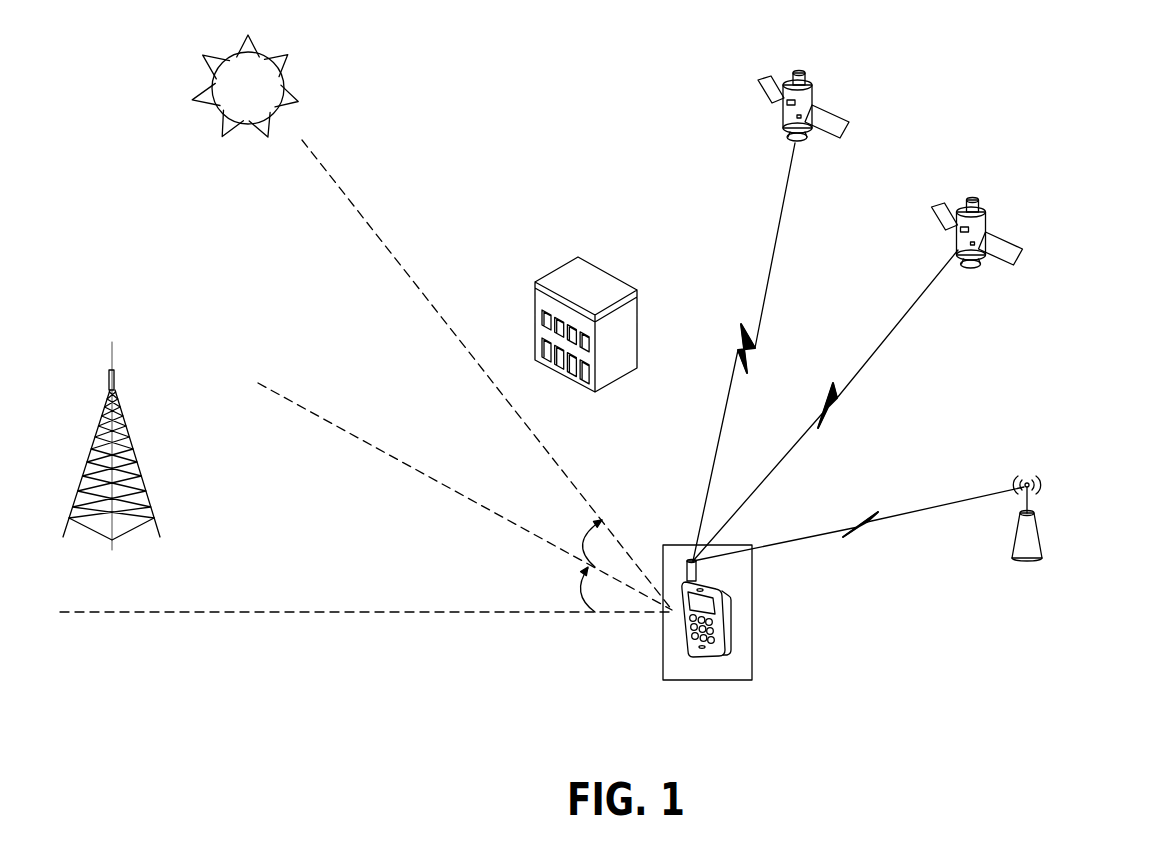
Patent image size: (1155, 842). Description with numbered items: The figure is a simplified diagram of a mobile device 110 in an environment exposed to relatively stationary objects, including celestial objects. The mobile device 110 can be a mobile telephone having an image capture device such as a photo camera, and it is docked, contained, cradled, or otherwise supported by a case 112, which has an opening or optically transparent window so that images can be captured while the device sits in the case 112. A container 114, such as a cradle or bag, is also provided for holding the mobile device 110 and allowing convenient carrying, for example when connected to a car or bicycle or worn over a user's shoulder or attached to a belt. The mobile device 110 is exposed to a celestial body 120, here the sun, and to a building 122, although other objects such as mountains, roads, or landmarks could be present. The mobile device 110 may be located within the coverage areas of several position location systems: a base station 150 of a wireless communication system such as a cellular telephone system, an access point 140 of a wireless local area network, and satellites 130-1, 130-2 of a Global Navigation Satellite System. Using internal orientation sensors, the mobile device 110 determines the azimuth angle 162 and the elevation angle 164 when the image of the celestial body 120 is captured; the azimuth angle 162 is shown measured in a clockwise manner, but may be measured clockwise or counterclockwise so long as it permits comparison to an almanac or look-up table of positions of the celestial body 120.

The mobile device 110 is at (760, 619).
The case 112 is at (730, 632).
The container 114 is at (708, 680).
The celestial body 120 is at (284, 88).
The building 122 is at (592, 262).
The satellite 130-1 is at (827, 105).
The satellite 130-2 is at (1000, 233).
The access point 140 is at (1038, 523).
The base station 150 is at (118, 392).
The azimuth angle 162 is at (582, 593).
The elevation angle 164 is at (582, 532).